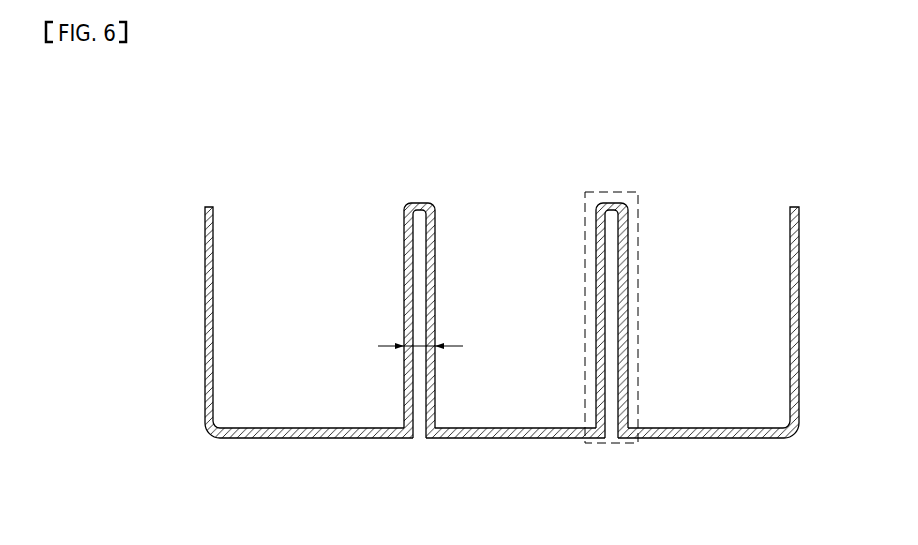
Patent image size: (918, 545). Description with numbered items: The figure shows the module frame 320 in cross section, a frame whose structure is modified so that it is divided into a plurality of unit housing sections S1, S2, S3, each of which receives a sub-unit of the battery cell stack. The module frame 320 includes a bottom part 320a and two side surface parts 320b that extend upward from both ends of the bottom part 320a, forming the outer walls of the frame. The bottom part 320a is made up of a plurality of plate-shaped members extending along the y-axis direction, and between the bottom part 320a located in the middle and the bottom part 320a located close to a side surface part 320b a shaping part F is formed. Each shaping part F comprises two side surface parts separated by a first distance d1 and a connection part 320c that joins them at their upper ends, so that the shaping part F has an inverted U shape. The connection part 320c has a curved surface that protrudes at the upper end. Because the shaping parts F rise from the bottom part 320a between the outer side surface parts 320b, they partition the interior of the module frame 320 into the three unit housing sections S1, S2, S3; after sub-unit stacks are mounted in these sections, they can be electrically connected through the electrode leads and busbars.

The module frame 320 is at (538, 87).
The bottom part 320a is at (262, 438).
The side surface part 320b is at (207, 207).
The connection part 320c is at (417, 204).
The shaping part F is at (612, 191).
The unit housing section S1 is at (313, 290).
The unit housing section S2 is at (500, 291).
The unit housing section S3 is at (701, 291).
The first distance d1 is at (420, 334).